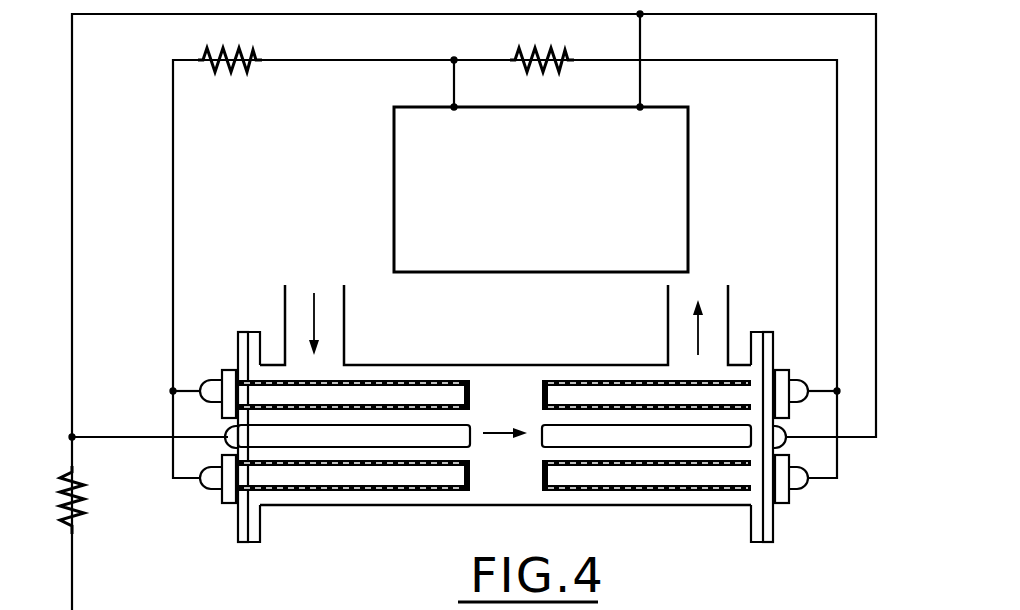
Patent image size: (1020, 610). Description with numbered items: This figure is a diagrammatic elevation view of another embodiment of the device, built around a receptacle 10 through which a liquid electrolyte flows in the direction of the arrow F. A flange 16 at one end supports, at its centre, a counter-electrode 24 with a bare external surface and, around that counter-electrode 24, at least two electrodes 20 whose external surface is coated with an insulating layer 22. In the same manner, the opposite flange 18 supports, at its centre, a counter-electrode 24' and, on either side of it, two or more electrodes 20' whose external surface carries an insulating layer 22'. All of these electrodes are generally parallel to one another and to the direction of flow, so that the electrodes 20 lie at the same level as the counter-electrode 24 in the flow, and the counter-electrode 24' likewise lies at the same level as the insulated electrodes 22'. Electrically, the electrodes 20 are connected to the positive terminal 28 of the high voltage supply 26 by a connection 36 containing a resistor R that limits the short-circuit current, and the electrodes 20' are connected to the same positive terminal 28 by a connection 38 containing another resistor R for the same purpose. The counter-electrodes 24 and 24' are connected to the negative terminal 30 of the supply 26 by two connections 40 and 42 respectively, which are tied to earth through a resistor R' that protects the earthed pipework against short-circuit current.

The receptacle 10 is at (436, 505).
The flange 16 is at (237, 522).
The flange 18 is at (773, 520).
The electrodes 20 is at (353, 426).
The electrodes 20' is at (648, 431).
The insulating layer 22 is at (354, 426).
The insulating layer 22' is at (646, 431).
The counter-electrode 24 is at (376, 446).
The counter-electrode 24' is at (646, 485).
The high voltage supply 26 is at (688, 206).
The positive terminal 28 is at (456, 106).
The negative terminal 30 is at (639, 106).
The connection 36 is at (173, 236).
The connection 38 is at (836, 207).
The connection 40 is at (72, 236).
The connection 42 is at (876, 206).